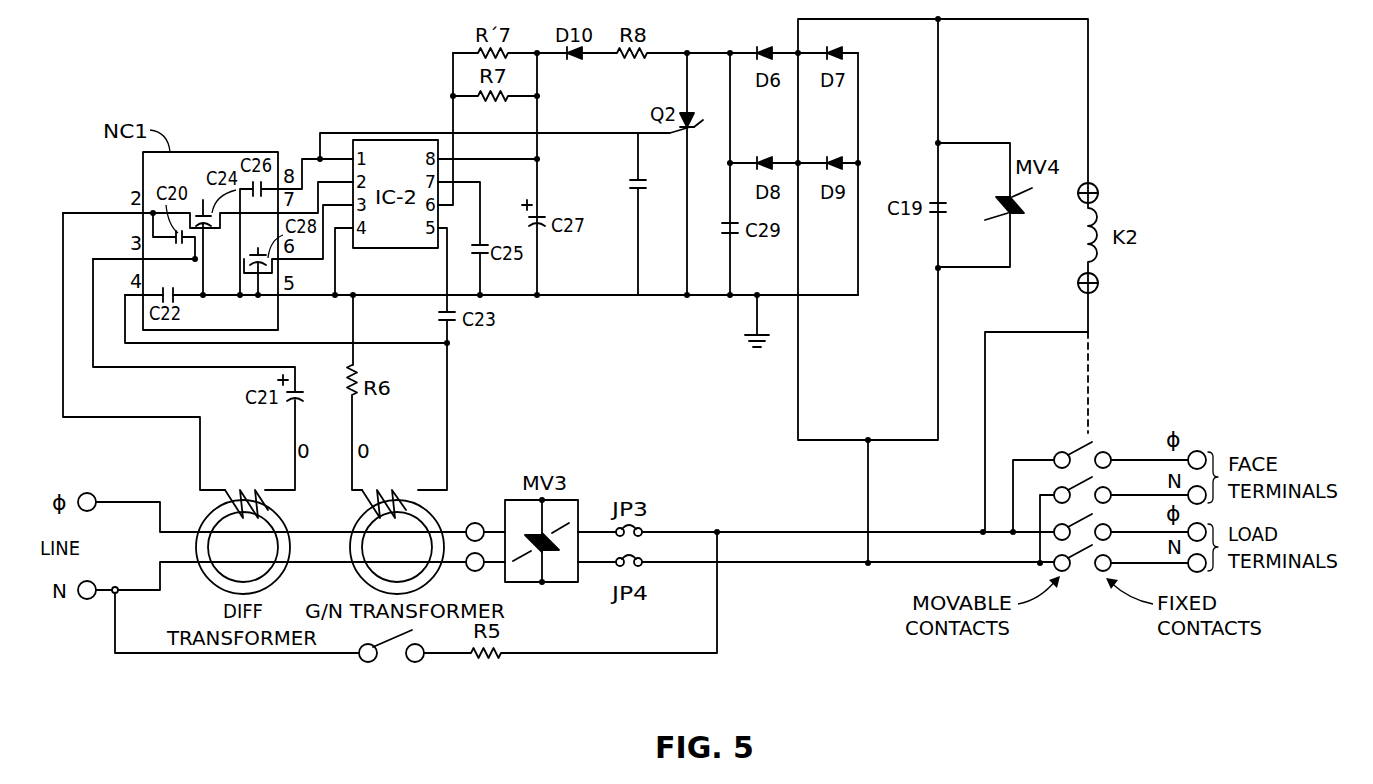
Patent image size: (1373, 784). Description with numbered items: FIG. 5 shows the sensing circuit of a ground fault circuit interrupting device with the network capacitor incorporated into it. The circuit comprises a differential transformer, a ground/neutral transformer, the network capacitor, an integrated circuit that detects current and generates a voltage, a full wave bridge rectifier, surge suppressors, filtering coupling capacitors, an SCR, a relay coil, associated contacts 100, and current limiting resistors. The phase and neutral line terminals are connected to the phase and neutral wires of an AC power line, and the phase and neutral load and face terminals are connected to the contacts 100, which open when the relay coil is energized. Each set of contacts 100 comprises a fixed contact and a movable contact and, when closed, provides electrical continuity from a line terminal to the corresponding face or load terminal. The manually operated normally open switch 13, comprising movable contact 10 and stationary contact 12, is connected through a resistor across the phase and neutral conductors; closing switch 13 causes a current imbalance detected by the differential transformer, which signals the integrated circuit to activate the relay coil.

The movable contact 10 is at (367, 666).
The stationary contact 12 is at (415, 666).
The manually operated normally open switch 13 is at (394, 684).
The contacts 100 is at (1112, 422).